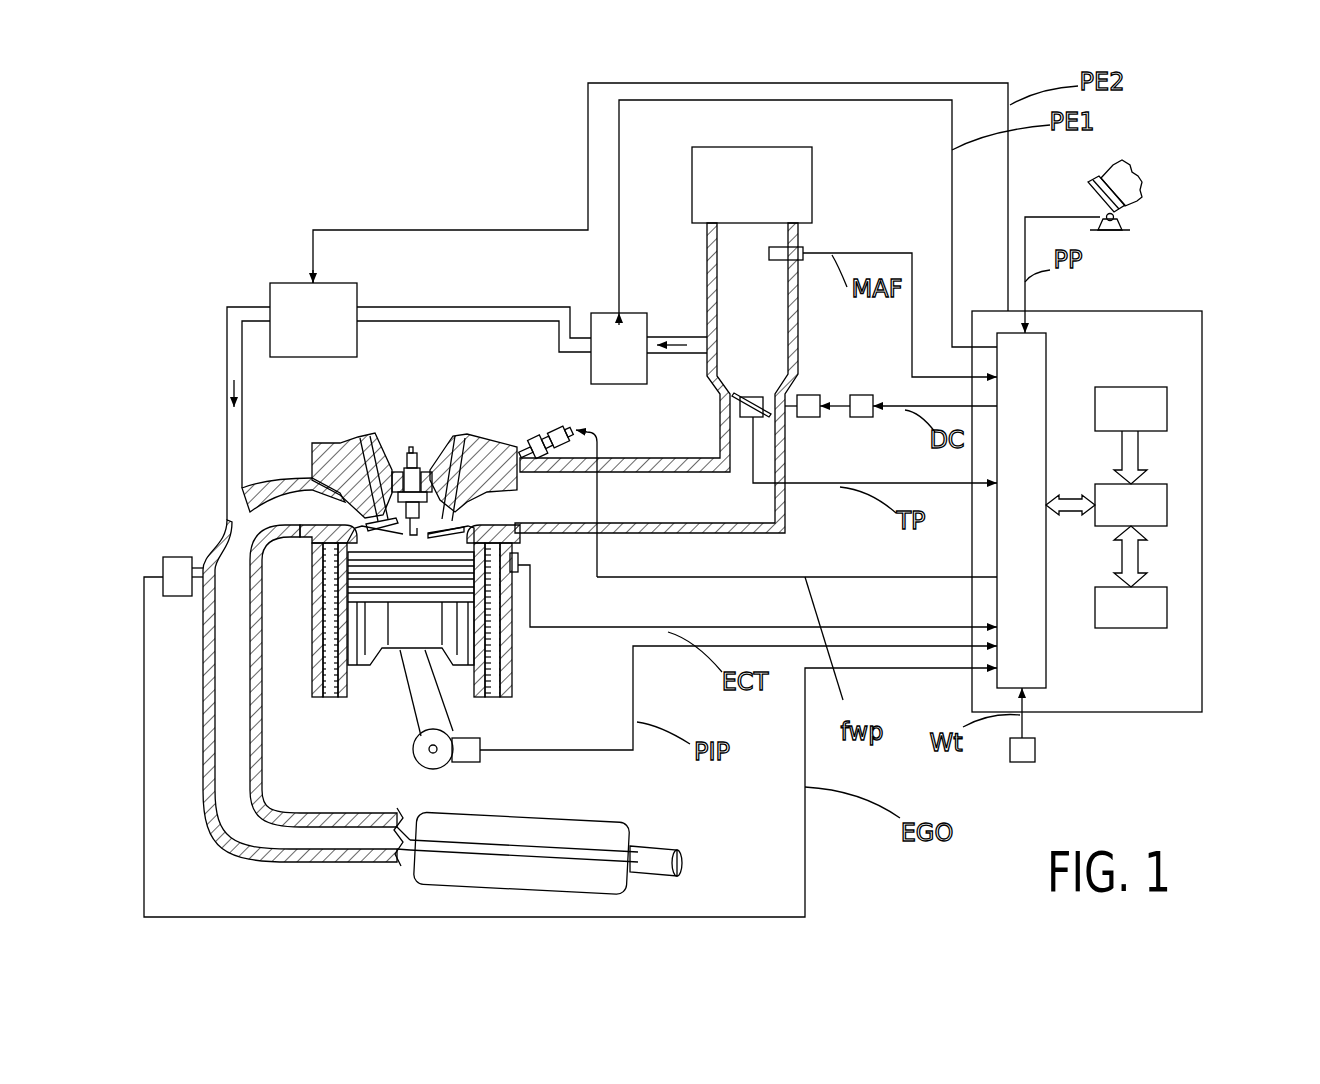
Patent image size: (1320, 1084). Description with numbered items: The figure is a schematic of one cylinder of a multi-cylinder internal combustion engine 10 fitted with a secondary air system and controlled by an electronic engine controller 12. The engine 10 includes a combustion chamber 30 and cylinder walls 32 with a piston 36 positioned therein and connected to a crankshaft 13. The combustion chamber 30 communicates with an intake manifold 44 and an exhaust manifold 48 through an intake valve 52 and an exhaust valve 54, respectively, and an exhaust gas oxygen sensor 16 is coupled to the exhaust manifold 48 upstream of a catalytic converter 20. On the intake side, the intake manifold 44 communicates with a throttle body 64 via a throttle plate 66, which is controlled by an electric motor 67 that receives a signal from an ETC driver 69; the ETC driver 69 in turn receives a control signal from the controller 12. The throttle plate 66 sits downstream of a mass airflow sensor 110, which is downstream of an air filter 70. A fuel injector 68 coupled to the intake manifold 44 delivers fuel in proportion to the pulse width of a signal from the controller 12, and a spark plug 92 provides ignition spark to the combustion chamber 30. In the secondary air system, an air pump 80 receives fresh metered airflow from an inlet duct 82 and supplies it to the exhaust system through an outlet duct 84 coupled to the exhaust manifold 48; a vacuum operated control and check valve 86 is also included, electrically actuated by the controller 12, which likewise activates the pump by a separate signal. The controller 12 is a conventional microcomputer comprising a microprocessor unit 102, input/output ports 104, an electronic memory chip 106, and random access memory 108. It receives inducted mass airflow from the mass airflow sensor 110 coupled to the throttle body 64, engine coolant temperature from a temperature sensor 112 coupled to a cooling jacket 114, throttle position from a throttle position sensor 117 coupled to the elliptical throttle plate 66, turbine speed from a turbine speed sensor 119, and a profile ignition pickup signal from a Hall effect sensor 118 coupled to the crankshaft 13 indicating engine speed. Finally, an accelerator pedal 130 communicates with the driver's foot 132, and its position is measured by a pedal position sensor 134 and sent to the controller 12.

The internal combustion engine 10 is at (368, 755).
The electronic engine controller 12 is at (1192, 311).
The crankshaft 13 is at (392, 826).
The exhaust gas oxygen sensor 16 is at (160, 566).
The catalytic converter 20 is at (598, 825).
The combustion chamber 30 is at (410, 543).
The cylinder walls 32 is at (357, 683).
The piston 36 is at (408, 660).
The intake manifold 44 is at (672, 514).
The exhaust manifold 48 is at (223, 545).
The intake valve 52 is at (470, 517).
The exhaust valve 54 is at (335, 495).
The throttle body 64 is at (712, 370).
The throttle plate 66 is at (733, 393).
The electric motor 67 is at (808, 395).
The fuel injector 68 is at (552, 440).
The ETC driver 69 is at (863, 395).
The air filter 70 is at (695, 215).
The air pump 80 is at (600, 313).
The inlet duct 82 is at (380, 305).
The outlet duct 84 is at (225, 430).
The vacuum operated control and check valve 86 is at (275, 283).
The spark plug 92 is at (417, 453).
The microprocessor unit 102 is at (1167, 497).
The input/output ports 104 is at (1047, 342).
The electronic memory chip 106 is at (1167, 408).
The random access memory 108 is at (1167, 605).
The mass airflow sensor 110 is at (797, 245).
The temperature sensor 112 is at (518, 563).
The cooling jacket 114 is at (492, 643).
The throttle position sensor 117 is at (758, 392).
The Hall effect sensor 118 is at (467, 763).
The turbine speed sensor 119 is at (1035, 748).
The accelerator pedal 130 is at (1090, 192).
The driver's foot 132 is at (1135, 178).
The pedal position sensor 134 is at (1123, 217).